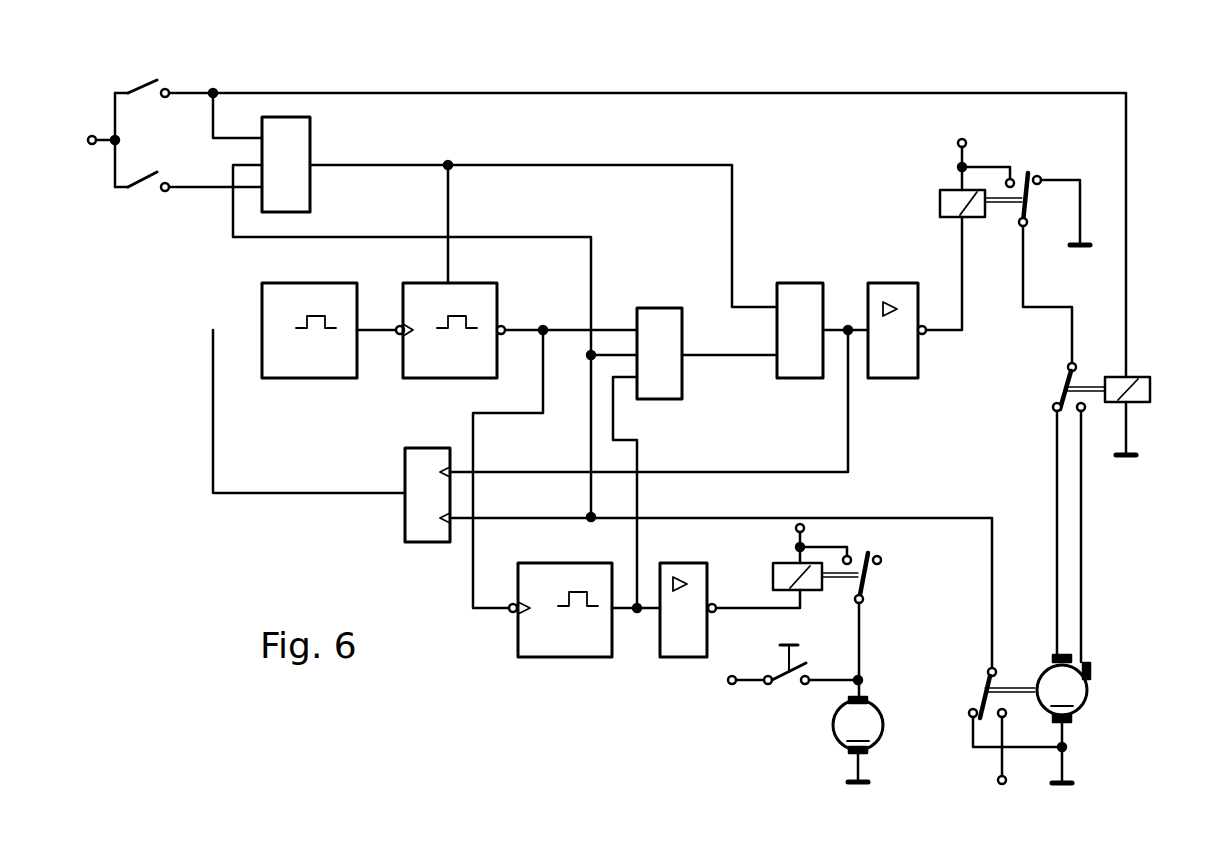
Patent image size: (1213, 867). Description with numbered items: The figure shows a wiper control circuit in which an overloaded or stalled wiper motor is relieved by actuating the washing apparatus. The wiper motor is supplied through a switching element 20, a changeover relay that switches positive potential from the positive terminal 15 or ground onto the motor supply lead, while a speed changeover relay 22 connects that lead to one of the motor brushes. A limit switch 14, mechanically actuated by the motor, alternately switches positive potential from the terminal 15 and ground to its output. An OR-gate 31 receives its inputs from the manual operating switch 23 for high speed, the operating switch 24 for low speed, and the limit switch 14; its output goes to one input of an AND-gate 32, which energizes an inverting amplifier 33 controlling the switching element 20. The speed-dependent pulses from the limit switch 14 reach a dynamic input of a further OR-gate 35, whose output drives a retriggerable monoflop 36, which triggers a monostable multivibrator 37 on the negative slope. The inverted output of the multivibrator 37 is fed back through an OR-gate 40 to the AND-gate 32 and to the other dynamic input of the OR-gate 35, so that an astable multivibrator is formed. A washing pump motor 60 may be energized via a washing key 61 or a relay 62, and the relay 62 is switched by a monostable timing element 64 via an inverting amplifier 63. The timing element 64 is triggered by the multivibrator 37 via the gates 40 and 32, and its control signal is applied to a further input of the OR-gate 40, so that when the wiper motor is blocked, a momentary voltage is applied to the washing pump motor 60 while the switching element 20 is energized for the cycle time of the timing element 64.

The limit switch 14 is at (975, 688).
The positive terminal 15 is at (93, 145).
The switching element 20 is at (977, 207).
The speed changeover relay 22 is at (1140, 382).
The manual operating switch for high speed 23 is at (137, 82).
The operating switch for low speed 24 is at (138, 177).
The OR-gate 31 is at (310, 147).
The AND-gate 32 is at (810, 291).
The inverting amplifier 33 is at (898, 292).
The further OR-gate 35 is at (427, 536).
The monoflop 36 is at (321, 292).
The monostable multivibrator 37 is at (497, 295).
The OR-gate 40 is at (682, 346).
The washing pump motor 60 is at (873, 712).
The washing key 61 is at (792, 693).
The relay 62 is at (785, 572).
The inverting amplifier 63 is at (700, 637).
The monostable timing element 64 is at (570, 645).